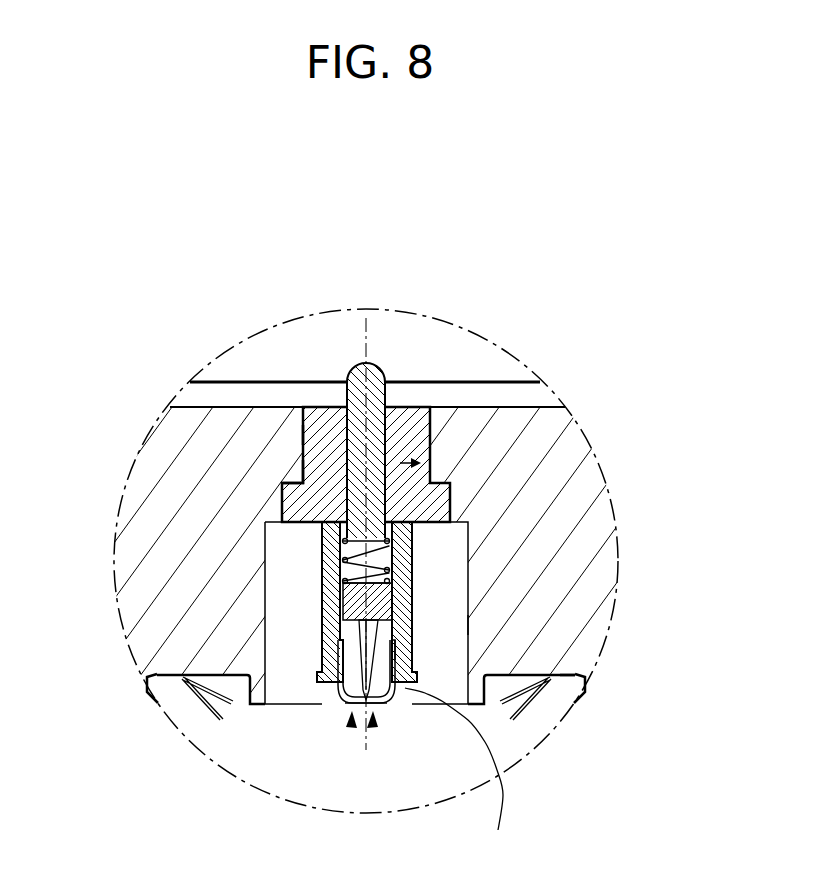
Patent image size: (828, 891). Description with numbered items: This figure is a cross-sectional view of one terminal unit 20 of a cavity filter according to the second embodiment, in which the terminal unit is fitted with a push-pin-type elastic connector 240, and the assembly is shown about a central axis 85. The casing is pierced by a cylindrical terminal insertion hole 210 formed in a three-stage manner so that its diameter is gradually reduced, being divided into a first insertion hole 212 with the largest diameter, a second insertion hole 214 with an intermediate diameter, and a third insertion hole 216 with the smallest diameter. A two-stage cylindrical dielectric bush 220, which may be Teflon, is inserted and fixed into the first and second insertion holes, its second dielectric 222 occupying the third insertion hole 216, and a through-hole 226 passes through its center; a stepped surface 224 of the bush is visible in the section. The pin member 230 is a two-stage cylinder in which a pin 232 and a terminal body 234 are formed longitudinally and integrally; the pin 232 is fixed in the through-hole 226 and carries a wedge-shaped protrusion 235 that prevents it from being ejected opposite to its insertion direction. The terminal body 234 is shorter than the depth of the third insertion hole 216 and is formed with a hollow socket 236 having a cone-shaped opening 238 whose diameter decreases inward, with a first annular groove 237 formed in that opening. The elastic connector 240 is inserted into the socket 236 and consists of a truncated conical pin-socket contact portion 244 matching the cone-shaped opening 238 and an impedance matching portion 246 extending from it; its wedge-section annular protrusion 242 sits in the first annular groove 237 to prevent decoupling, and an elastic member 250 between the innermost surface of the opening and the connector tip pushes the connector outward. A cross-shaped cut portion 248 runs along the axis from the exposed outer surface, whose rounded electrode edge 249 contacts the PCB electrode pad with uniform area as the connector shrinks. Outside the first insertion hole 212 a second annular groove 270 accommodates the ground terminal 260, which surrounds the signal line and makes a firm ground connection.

The terminal unit 20 is at (103, 268).
The central axis 85 is at (382, 342).
The terminal insertion hole 210 is at (298, 548).
The first insertion hole 212 is at (440, 590).
The second insertion hole 214 is at (450, 522).
The third insertion hole 216 is at (430, 436).
The dielectric bush 220 is at (282, 505).
The second dielectric 222 is at (302, 400).
The block step 224 is at (303, 480).
The through-hole 226 is at (347, 378).
The pin member 230 is at (303, 432).
The pin 232 is at (395, 380).
The terminal body 234 is at (328, 688).
The wedge-shaped protrusion 235 is at (430, 462).
The hollow socket 236 is at (468, 542).
The first annular groove 237 is at (408, 655).
The cone-shaped opening 238 is at (525, 705).
The elastic connector 240 is at (338, 686).
The annular protrusion 242 is at (530, 692).
The pin-socket contact portion 244 is at (393, 700).
The impedance matching portion 246 is at (500, 700).
The cut portion 248 is at (373, 713).
The electrode edge 249 is at (352, 713).
The elastic member 250 is at (322, 560).
The ground terminal 260 is at (165, 710).
The second annular groove 270 is at (160, 676).